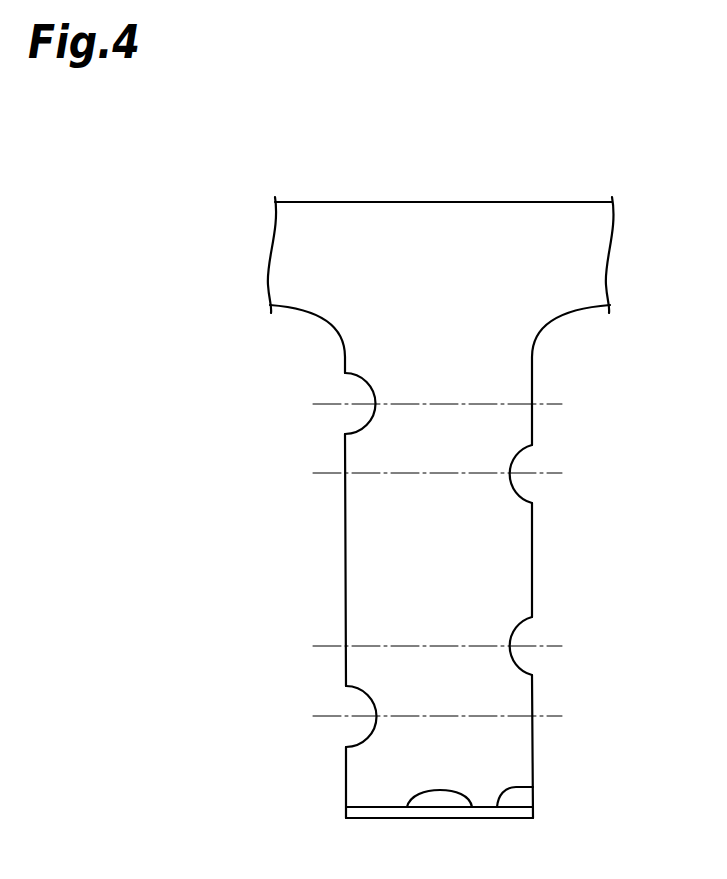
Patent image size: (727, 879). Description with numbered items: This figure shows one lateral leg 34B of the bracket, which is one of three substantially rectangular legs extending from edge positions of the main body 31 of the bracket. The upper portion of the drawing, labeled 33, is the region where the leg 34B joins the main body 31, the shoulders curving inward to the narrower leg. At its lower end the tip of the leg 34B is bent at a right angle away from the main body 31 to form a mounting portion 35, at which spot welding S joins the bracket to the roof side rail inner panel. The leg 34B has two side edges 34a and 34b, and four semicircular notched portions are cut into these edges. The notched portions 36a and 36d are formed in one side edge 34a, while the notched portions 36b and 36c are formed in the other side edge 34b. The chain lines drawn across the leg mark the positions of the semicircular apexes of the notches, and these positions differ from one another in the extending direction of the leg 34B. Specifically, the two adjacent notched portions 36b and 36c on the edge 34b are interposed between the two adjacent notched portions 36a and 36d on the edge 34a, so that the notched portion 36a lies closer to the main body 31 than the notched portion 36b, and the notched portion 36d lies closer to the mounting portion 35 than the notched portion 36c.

The main body 31 is at (541, 200).
The base portion 33 is at (588, 259).
The lateral leg 34B is at (388, 564).
The side edge 34a is at (346, 781).
The side edge 34b is at (533, 757).
The mounting portion 35 is at (533, 787).
The notched portion 36a is at (358, 432).
The notched portion 36b is at (515, 446).
The notched portion 36c is at (515, 618).
The notched portion 36d is at (358, 695).
The spot welding S is at (433, 790).